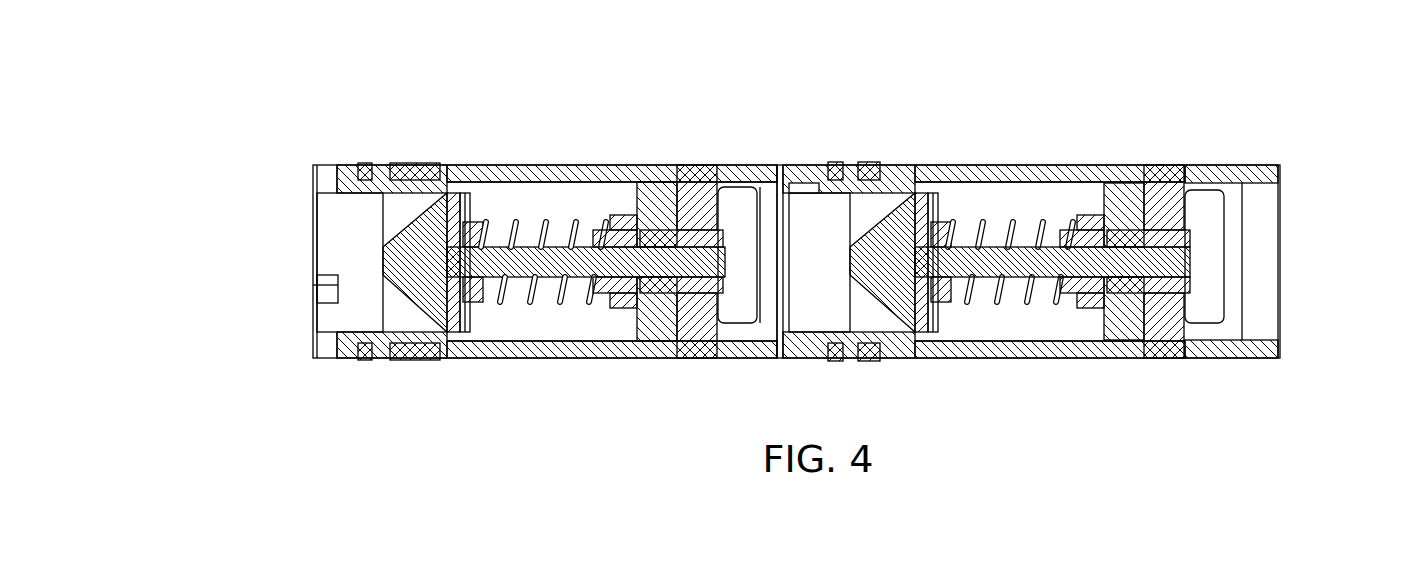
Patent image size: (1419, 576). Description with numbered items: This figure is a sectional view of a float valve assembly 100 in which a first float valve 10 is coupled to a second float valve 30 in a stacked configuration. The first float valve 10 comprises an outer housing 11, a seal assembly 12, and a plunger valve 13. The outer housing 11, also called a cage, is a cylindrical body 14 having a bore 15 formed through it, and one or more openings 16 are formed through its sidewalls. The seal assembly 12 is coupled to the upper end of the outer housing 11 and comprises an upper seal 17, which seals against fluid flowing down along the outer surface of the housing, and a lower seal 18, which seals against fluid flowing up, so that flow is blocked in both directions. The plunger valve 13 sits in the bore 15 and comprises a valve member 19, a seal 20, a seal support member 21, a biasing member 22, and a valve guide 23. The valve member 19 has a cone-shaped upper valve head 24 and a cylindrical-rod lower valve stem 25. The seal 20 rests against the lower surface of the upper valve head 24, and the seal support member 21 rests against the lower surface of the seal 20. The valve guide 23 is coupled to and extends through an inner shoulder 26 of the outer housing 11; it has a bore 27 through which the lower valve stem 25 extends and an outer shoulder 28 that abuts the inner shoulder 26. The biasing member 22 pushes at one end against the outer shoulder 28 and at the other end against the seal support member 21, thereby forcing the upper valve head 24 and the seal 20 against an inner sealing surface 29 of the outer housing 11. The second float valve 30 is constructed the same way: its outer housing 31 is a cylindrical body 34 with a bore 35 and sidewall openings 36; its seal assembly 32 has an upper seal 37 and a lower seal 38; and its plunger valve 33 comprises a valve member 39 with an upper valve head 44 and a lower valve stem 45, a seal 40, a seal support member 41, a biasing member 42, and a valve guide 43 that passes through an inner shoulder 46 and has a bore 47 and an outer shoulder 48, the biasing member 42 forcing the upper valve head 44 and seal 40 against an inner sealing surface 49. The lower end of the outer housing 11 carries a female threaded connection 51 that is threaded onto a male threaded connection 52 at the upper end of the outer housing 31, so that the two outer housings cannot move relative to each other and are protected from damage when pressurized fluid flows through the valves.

The float valve assembly 100 is at (470, 55).
The first float valve 10 is at (541, 138).
The outer housing 11 is at (730, 165).
The seal assembly 12 is at (388, 157).
The plunger valve 13 is at (522, 283).
The cylindrical body 14 is at (483, 165).
The bore 15 is at (345, 237).
The openings 16 is at (583, 182).
The upper seal 17 is at (376, 163).
The lower seal 18 is at (418, 165).
The valve member 19 is at (380, 263).
The seal 20 is at (449, 361).
The seal support member 21 is at (490, 300).
The biasing member 22 is at (533, 297).
The valve guide 23 is at (603, 293).
The upper valve head 24 is at (410, 285).
The lower valve stem 25 is at (690, 262).
The inner shoulder 26 is at (623, 182).
The bore 27 is at (677, 165).
The outer shoulder 28 is at (640, 300).
The inner sealing surface 29 is at (450, 165).
The second float valve 30 is at (1062, 133).
The outer housing 31 is at (1252, 163).
The seal assembly 32 is at (861, 165).
The plunger valve 33 is at (1007, 165).
The cylindrical body 34 is at (1238, 165).
The bore 35 is at (1232, 237).
The openings 36 is at (953, 165).
The upper seal 37 is at (839, 165).
The lower seal 38 is at (883, 165).
The valve member 39 is at (848, 263).
The seal 40 is at (913, 360).
The seal support member 41 is at (950, 290).
The biasing member 42 is at (980, 290).
The valve guide 43 is at (1077, 290).
The upper valve head 44 is at (880, 292).
The lower valve stem 45 is at (1010, 297).
The inner shoulder 46 is at (1088, 165).
The bore 47 is at (1167, 283).
The outer shoulder 48 is at (1097, 307).
The inner sealing surface 49 is at (918, 165).
The female threaded connection 51 is at (792, 165).
The male threaded connection 52 is at (795, 192).